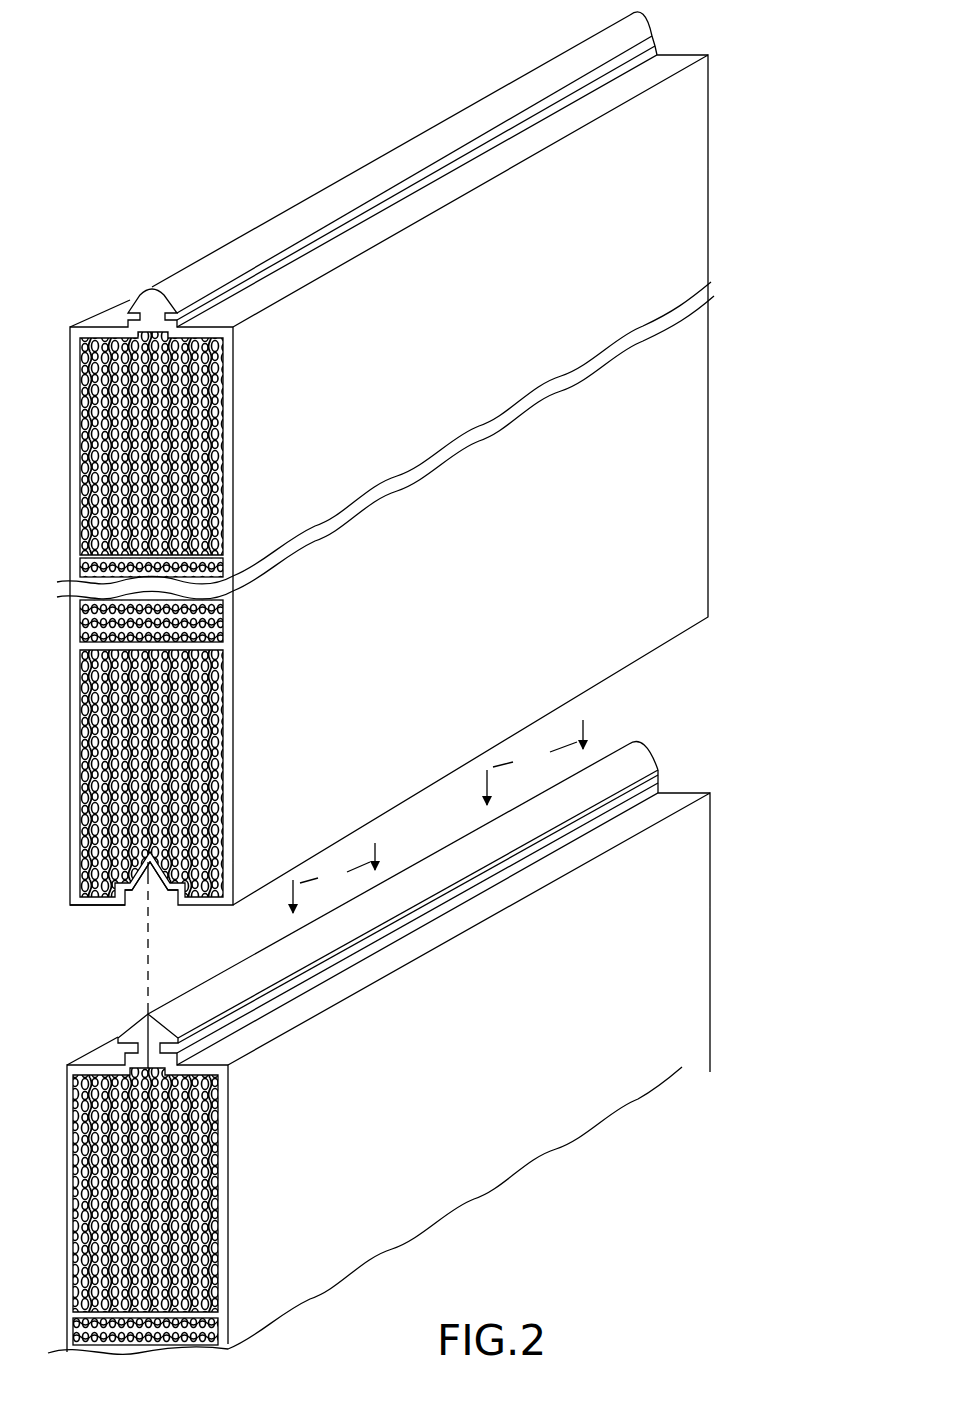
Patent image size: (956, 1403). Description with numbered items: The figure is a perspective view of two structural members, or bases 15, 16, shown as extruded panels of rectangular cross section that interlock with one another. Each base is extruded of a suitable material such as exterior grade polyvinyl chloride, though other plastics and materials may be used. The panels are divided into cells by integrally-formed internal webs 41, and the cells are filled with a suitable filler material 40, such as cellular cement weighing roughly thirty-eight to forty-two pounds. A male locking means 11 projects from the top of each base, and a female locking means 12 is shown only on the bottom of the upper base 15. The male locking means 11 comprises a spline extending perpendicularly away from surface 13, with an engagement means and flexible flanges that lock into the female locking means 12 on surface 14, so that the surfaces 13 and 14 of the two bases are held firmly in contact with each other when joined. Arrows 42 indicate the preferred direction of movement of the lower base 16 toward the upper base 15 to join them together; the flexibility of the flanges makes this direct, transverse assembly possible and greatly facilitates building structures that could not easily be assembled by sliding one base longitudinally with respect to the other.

The male locking means 11 is at (645, 16).
The female locking means 12 is at (145, 900).
The surface 13 is at (102, 327).
The surface 14 is at (85, 905).
The structural member or base 15 is at (712, 443).
The structural member or base 16 is at (712, 878).
The filler material 40 is at (230, 553).
The internal webs 41 is at (222, 628).
The arrows 42 is at (438, 816).